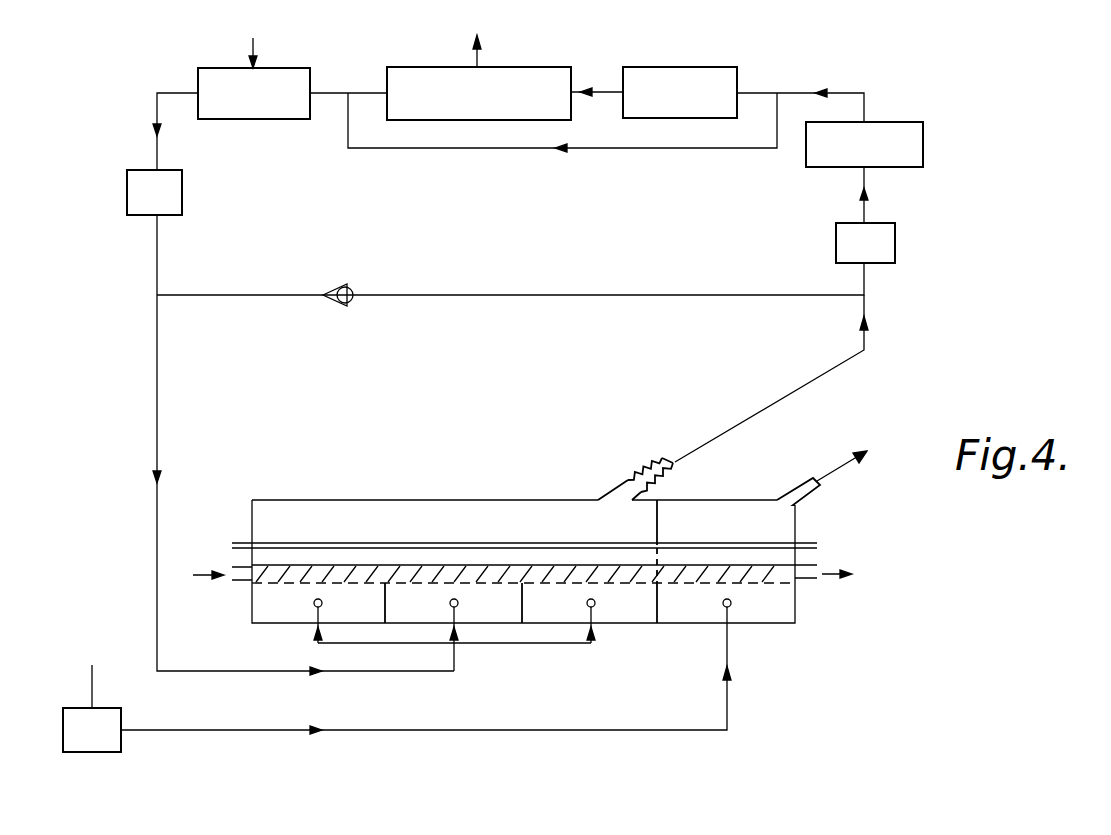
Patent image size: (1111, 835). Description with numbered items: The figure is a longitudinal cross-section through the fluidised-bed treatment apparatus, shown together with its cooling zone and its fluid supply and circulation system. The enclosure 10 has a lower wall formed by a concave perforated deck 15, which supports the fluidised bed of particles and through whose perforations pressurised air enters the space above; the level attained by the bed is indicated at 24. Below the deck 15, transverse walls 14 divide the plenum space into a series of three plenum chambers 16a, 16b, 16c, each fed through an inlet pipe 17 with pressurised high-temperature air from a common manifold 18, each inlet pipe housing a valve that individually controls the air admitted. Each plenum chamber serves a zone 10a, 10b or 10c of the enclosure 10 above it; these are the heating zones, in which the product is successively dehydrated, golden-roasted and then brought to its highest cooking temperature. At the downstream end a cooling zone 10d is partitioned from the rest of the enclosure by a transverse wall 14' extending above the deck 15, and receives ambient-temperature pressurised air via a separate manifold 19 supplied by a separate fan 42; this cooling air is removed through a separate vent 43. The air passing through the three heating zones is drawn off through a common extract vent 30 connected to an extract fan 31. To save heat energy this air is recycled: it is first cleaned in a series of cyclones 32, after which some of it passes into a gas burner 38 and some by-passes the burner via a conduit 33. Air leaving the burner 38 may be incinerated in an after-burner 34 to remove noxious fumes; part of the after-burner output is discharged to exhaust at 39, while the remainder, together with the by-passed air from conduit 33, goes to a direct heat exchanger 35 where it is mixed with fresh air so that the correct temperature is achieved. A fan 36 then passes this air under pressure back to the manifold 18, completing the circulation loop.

The enclosure 10 is at (405, 500).
The zone 10a is at (318, 519).
The zone 10b is at (453, 519).
The zone 10c is at (589, 519).
The cooling zone 10d is at (717, 519).
The transverse walls 14 is at (518, 619).
The transverse wall 14' is at (686, 528).
The perforated deck 15 is at (615, 583).
The plenum chamber 16a is at (292, 618).
The plenum chamber 16b is at (429, 632).
The plenum chamber 16c is at (566, 618).
The inlet pipe 17 is at (594, 606).
The common manifold 18 is at (527, 643).
The manifold 19 is at (730, 700).
The level of the fluidised bed 24 is at (278, 565).
The extract vent 30 is at (617, 483).
The extract fan 31 is at (895, 243).
The cyclones 32 is at (923, 145).
The conduit 33 is at (610, 150).
The after-burner 34 is at (556, 117).
The direct heat exchanger 35 is at (290, 120).
The fan 36 is at (182, 192).
The gas burner 38 is at (690, 67).
The exhaust 39 is at (474, 58).
The fan 42 is at (115, 718).
The vent 43 is at (793, 487).